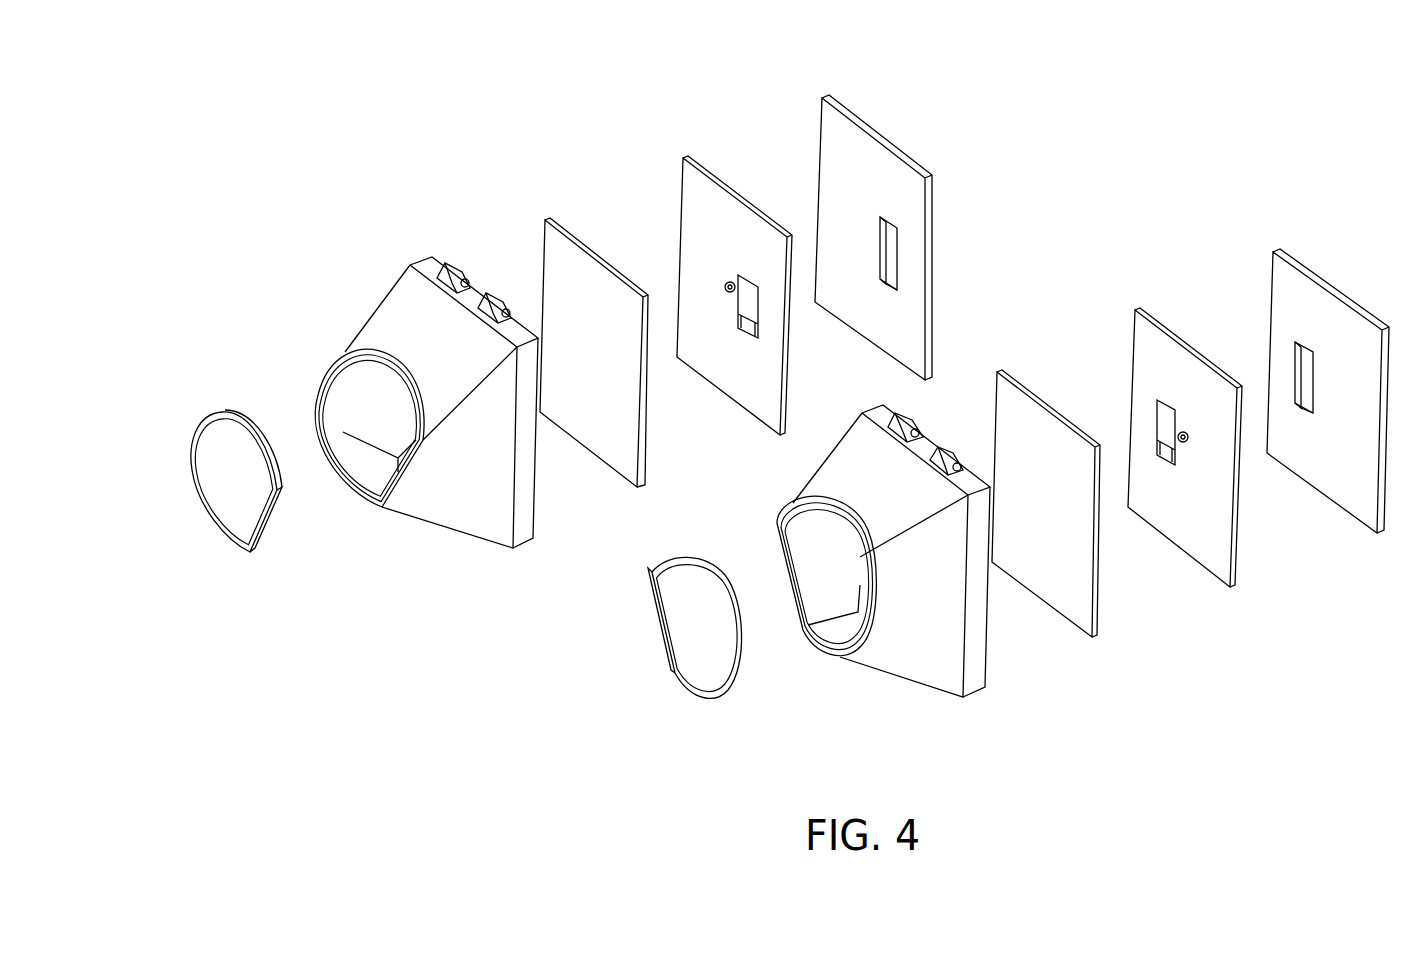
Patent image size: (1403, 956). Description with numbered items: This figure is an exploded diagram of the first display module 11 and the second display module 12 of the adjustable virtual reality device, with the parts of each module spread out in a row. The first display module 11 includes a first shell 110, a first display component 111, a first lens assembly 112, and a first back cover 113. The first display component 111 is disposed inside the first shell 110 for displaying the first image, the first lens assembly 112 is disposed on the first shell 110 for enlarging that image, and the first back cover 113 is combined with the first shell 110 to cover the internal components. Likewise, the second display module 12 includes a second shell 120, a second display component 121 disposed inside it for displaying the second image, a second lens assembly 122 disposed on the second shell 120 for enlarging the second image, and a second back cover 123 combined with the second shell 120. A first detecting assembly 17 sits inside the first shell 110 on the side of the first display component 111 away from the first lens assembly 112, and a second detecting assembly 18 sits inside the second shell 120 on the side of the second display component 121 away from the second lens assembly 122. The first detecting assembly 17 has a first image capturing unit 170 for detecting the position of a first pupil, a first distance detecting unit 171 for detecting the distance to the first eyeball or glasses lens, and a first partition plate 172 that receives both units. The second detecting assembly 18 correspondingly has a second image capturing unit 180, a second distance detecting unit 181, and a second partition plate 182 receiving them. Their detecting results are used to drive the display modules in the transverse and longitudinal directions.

The first display module 11 is at (452, 110).
The second display module 12 is at (1207, 762).
The first detecting assembly 17 is at (725, 127).
The second detecting assembly 18 is at (1252, 642).
The first shell 110 is at (408, 290).
The first display component 111 is at (573, 258).
The first lens assembly 112 is at (215, 437).
The first back cover 113 is at (850, 138).
The second shell 120 is at (925, 653).
The second display component 121 is at (1070, 600).
The second lens assembly 122 is at (700, 683).
The second back cover 123 is at (1355, 500).
The first image capturing unit 170 is at (728, 285).
The first distance detecting unit 171 is at (750, 300).
The first partition plate 172 is at (732, 215).
The second image capturing unit 180 is at (1190, 442).
The second distance detecting unit 181 is at (1157, 420).
The second partition plate 182 is at (1172, 350).